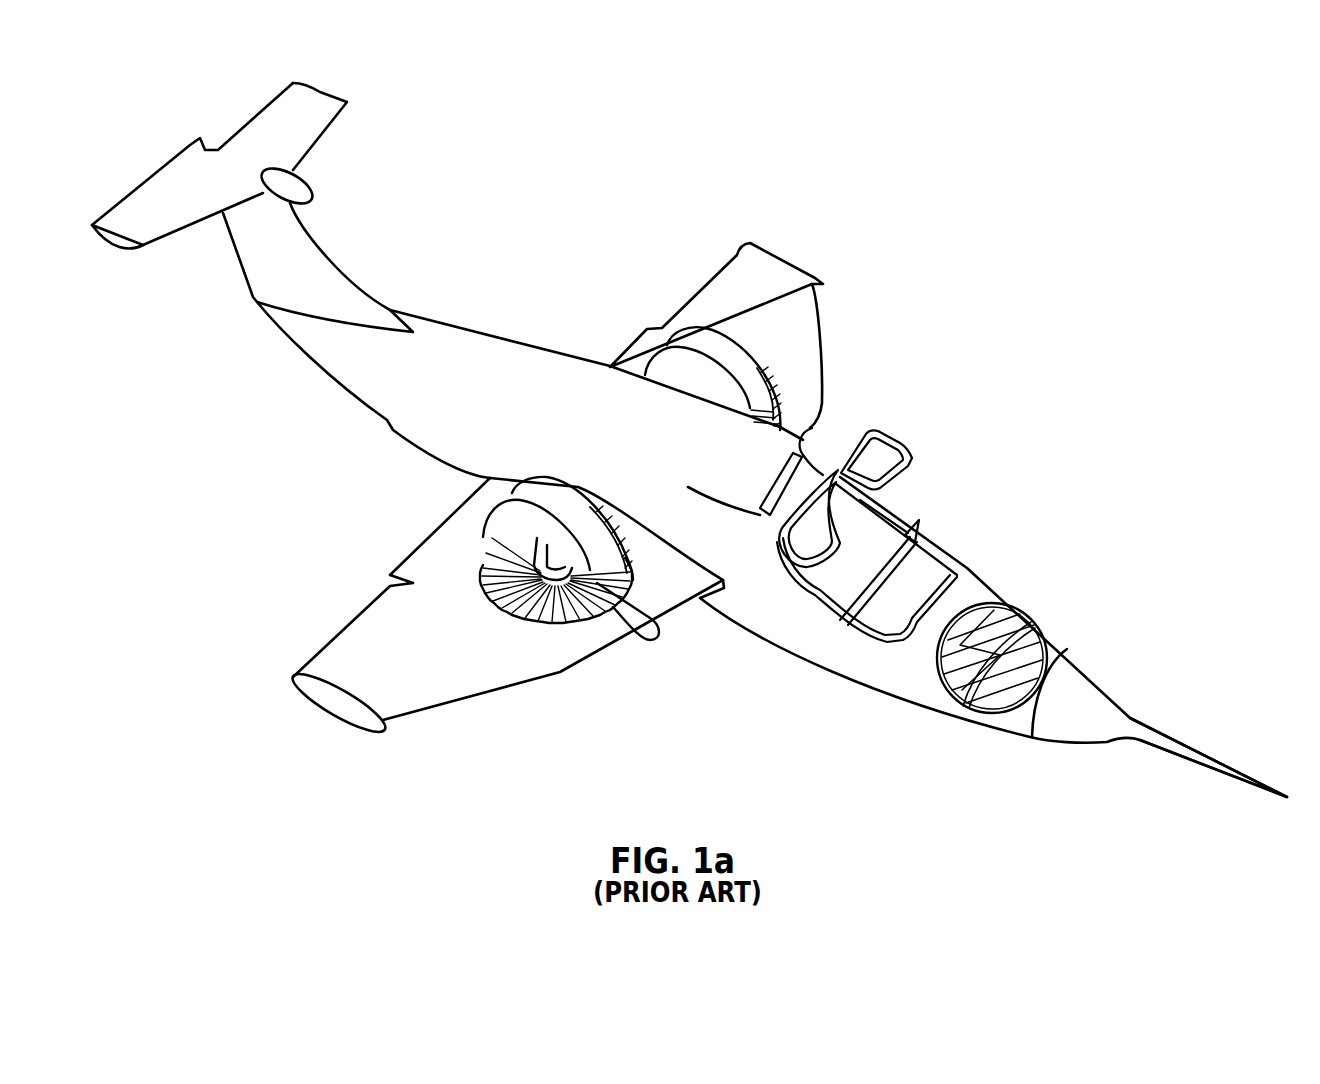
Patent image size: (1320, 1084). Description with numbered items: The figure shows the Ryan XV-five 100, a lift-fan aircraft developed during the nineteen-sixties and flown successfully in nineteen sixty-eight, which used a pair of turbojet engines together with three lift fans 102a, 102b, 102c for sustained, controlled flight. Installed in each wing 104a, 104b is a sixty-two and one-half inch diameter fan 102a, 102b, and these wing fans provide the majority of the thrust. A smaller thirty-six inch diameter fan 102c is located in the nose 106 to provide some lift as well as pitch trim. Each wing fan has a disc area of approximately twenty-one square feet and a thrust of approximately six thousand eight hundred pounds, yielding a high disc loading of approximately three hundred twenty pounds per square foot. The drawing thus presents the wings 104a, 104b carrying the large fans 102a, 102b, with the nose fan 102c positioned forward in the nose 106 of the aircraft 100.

The XV-5 lift-fan aircraft 100 is at (1086, 132).
The lift fan 102a is at (492, 591).
The lift fan 102b is at (797, 424).
The nose lift fan 102c is at (1021, 645).
The wing 104a is at (340, 660).
The wing 104b is at (706, 313).
The nose 106 is at (1137, 722).